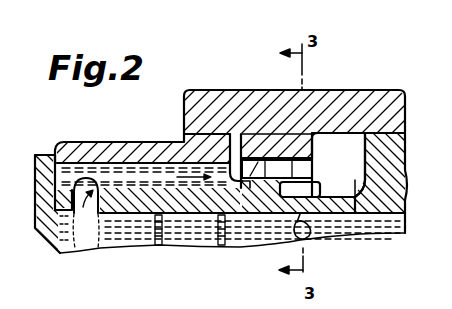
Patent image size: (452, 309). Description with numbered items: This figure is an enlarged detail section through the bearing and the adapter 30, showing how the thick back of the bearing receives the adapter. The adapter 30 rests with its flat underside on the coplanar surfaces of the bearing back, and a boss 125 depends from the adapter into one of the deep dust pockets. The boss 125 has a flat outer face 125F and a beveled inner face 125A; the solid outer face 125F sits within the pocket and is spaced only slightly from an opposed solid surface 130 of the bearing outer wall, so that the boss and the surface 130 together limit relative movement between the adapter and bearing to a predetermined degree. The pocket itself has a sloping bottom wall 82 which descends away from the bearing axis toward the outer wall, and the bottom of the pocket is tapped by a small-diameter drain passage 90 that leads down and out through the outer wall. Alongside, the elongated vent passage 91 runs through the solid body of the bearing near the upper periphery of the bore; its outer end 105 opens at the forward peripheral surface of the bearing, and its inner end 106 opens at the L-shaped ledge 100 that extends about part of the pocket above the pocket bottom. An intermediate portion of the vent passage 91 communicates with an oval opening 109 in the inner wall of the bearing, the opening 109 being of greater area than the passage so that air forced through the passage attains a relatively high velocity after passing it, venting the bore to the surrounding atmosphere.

The adapter 30 is at (396, 88).
The bottom wall 82 is at (322, 193).
The drain passage 90 is at (291, 240).
The vent passage 91 is at (114, 170).
The L-shaped ledge 100 is at (353, 168).
The outer end 105 is at (75, 163).
The inner end 106 is at (240, 186).
The opening 109 is at (79, 215).
The boss 125 is at (330, 144).
The inner face 125A is at (355, 181).
The outer face 125F is at (247, 133).
The solid surface 130 is at (231, 133).